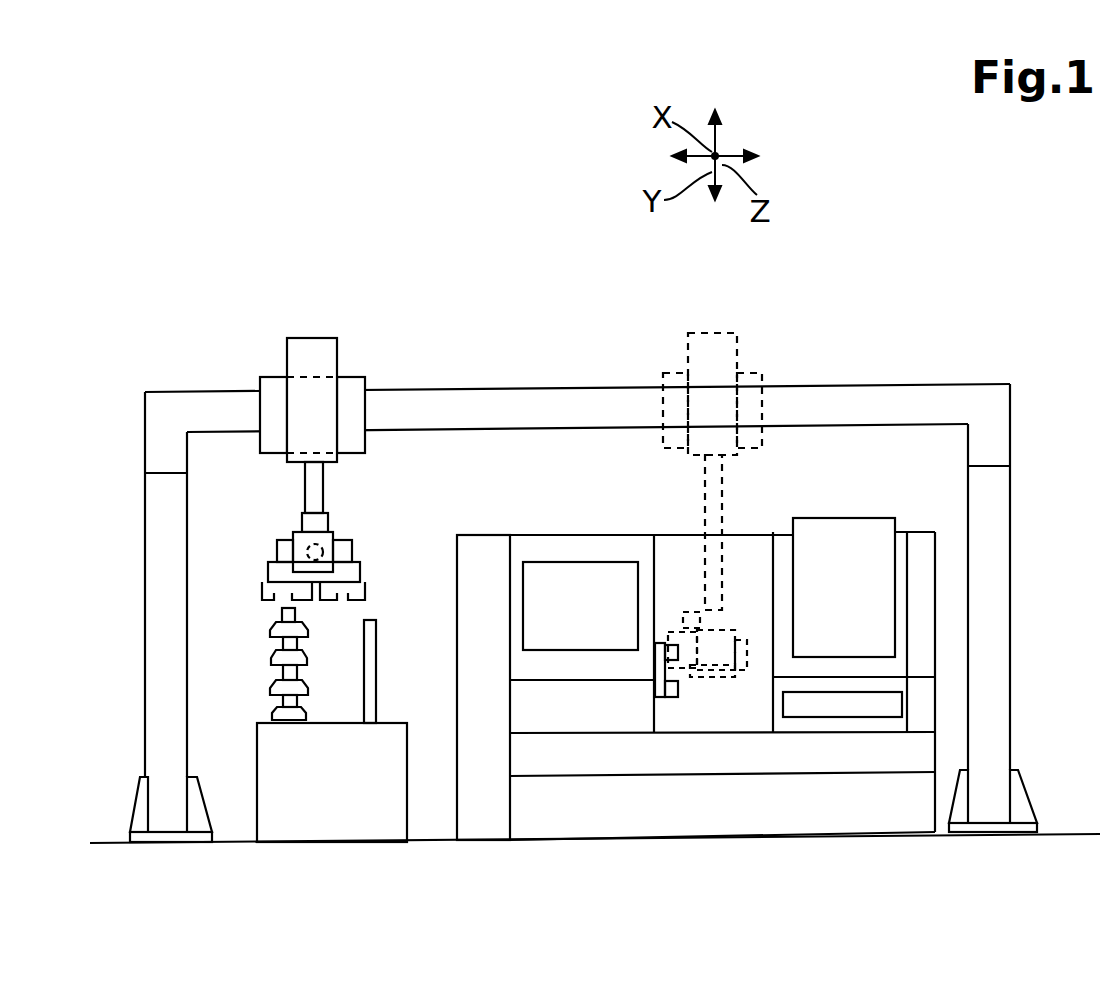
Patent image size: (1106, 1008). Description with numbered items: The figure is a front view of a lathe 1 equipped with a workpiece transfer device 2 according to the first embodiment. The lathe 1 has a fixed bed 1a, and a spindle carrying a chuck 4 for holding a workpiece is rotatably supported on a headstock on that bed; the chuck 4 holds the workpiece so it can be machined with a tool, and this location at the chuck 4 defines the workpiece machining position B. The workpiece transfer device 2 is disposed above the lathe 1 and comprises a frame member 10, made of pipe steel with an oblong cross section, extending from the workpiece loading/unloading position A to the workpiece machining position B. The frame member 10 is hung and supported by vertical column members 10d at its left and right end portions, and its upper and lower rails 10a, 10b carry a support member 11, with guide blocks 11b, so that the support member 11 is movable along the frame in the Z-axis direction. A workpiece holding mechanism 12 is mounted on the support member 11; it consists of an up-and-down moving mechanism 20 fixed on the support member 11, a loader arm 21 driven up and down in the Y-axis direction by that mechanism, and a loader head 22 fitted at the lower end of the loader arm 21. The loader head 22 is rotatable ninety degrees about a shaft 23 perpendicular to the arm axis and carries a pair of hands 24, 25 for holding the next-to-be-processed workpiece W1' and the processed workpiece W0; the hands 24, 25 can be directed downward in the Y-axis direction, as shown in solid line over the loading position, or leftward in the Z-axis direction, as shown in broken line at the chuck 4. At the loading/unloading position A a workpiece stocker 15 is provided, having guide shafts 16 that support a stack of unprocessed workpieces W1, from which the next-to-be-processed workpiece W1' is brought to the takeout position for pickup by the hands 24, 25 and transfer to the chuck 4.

The lathe 1 is at (885, 505).
The fixed bed 1a is at (612, 733).
The workpiece transfer device 2 is at (197, 318).
The chuck 4 is at (660, 700).
The frame member 10 is at (950, 366).
The upper beam rail 10a is at (485, 387).
The lower beam rail 10b is at (590, 398).
The vertical column members 10d is at (147, 656).
The support member 11 is at (377, 374).
The carriage guide block 11b is at (272, 412).
The workpiece holding mechanism 12 is at (378, 540).
The workpiece stocker 15 is at (390, 675).
The guide shafts 16 is at (280, 700).
The up-and-down moving mechanism 20 is at (337, 350).
The loader arm 21 is at (323, 487).
The loader head 22 is at (285, 547).
The shaft 23 is at (348, 545).
The hand 24 is at (268, 578).
The hand 25 is at (360, 573).
The workpiece loading/unloading position A is at (260, 612).
The workpiece machining position B is at (682, 702).
The unprocessed workpieces W1 is at (482, 679).
The next-to-be-processed workpiece W1' is at (252, 664).
The processed workpiece W0 is at (652, 668).